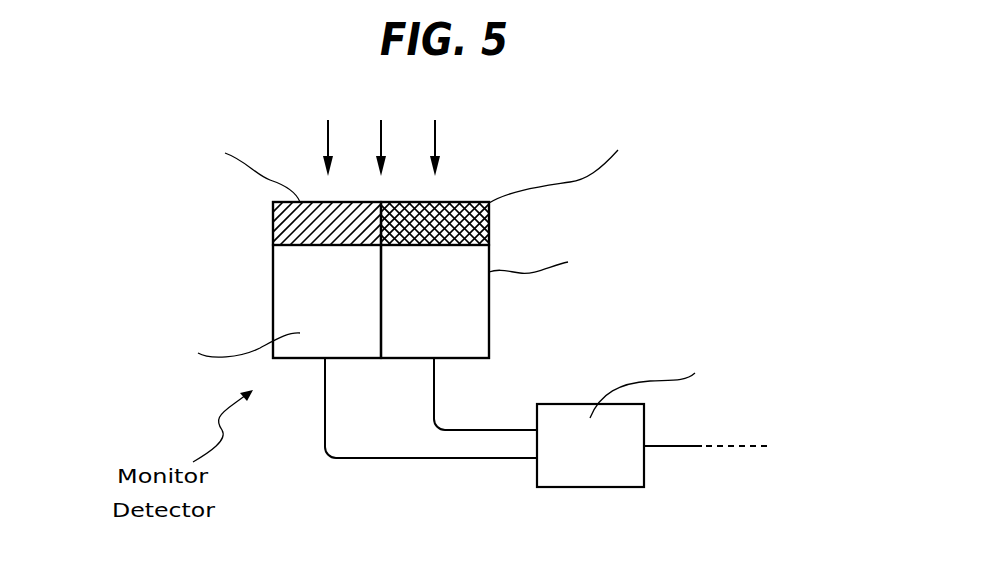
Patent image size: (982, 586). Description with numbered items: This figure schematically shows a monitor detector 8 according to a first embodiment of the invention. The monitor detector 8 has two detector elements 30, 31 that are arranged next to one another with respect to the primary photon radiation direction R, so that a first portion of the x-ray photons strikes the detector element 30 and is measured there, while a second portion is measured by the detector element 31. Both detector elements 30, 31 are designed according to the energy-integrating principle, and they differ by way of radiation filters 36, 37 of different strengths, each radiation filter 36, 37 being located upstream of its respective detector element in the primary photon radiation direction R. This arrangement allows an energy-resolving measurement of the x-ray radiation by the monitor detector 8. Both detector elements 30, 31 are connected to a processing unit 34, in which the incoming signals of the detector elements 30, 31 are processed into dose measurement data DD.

The monitor detector 8 is at (291, 391).
The detector element 30 is at (283, 300).
The detector element 31 is at (490, 299).
The processing unit 34 is at (590, 488).
The radiation filter 36 is at (277, 218).
The radiation filter 37 is at (490, 221).
The primary photon radiation direction R is at (460, 136).
The dose measurement data DD is at (670, 447).